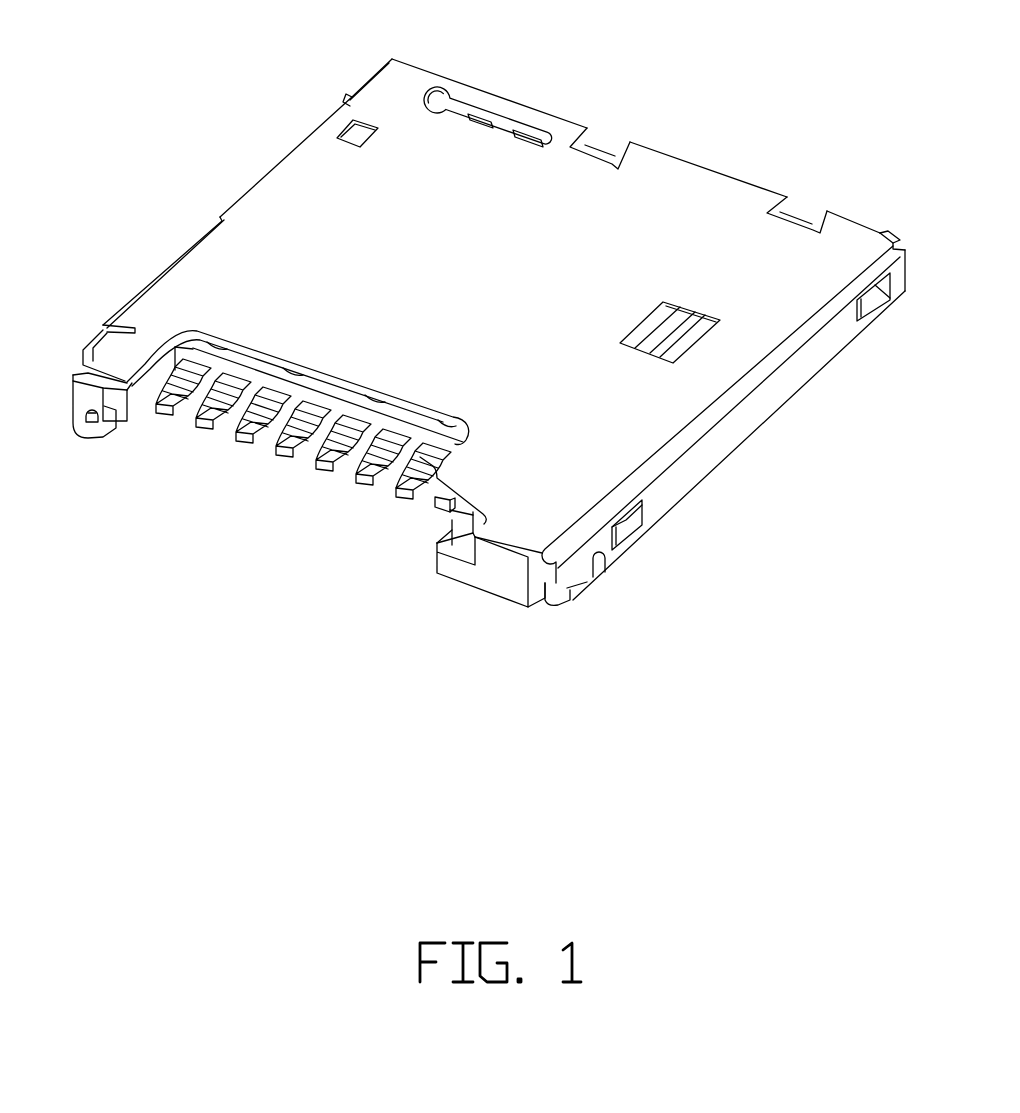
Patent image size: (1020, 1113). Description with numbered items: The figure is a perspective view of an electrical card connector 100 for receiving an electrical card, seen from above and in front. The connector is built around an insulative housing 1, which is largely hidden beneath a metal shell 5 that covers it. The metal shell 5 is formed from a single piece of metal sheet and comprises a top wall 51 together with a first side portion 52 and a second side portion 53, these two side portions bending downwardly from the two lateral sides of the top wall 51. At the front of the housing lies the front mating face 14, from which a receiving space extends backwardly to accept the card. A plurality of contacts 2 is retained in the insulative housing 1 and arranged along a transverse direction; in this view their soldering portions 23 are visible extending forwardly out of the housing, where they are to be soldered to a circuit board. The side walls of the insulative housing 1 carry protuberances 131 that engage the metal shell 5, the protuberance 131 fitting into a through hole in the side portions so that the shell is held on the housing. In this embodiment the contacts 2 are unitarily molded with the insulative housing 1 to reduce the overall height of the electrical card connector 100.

The electrical card connector 100 is at (258, 163).
The insulative housing 1 is at (148, 385).
The front mating face 14 is at (505, 570).
The protuberance 131 is at (627, 517).
The contacts 2 is at (317, 460).
The soldering portion 23 is at (397, 492).
The metal shell 5 is at (675, 195).
The top wall 51 is at (452, 182).
The first side portion 52 is at (157, 267).
The second side portion 53 is at (755, 408).